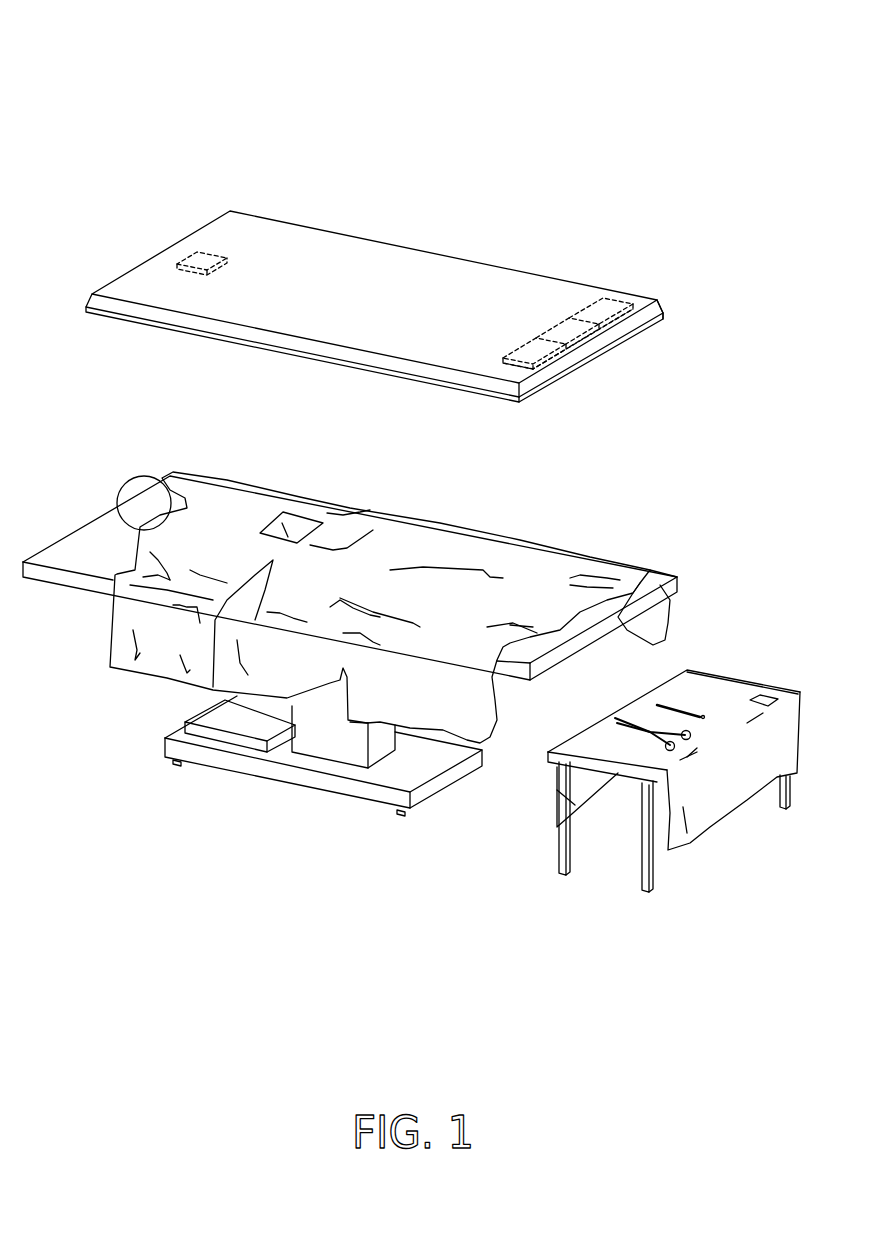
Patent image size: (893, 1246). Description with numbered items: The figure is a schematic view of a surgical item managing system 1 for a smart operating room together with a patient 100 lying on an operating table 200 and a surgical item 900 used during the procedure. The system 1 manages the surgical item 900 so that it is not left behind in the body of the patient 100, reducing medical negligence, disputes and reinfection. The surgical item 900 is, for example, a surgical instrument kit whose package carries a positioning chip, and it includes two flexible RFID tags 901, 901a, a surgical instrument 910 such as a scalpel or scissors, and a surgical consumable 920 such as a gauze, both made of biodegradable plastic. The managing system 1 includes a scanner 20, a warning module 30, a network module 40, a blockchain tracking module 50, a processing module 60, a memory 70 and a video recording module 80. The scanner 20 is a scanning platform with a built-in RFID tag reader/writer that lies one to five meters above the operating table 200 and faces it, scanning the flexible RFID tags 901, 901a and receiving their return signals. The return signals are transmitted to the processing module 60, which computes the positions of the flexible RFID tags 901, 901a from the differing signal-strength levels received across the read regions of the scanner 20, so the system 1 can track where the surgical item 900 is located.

The surgical item managing system 1 is at (100, 95).
The scanner 20 is at (282, 252).
The warning module 30 is at (636, 314).
The network module 40 is at (590, 319).
The blockchain tracking module 50 is at (573, 330).
The processing module 60 is at (540, 343).
The memory 70 is at (547, 361).
The video recording module 80 is at (193, 256).
The patient 100 is at (125, 488).
The operating table 200 is at (73, 581).
The surgical item 900 is at (720, 664).
The flexible RFID tag 901 is at (703, 716).
The flexible RFID tag 901a is at (768, 703).
The surgical instrument 910 is at (670, 708).
The surgical consumable 920 is at (765, 693).